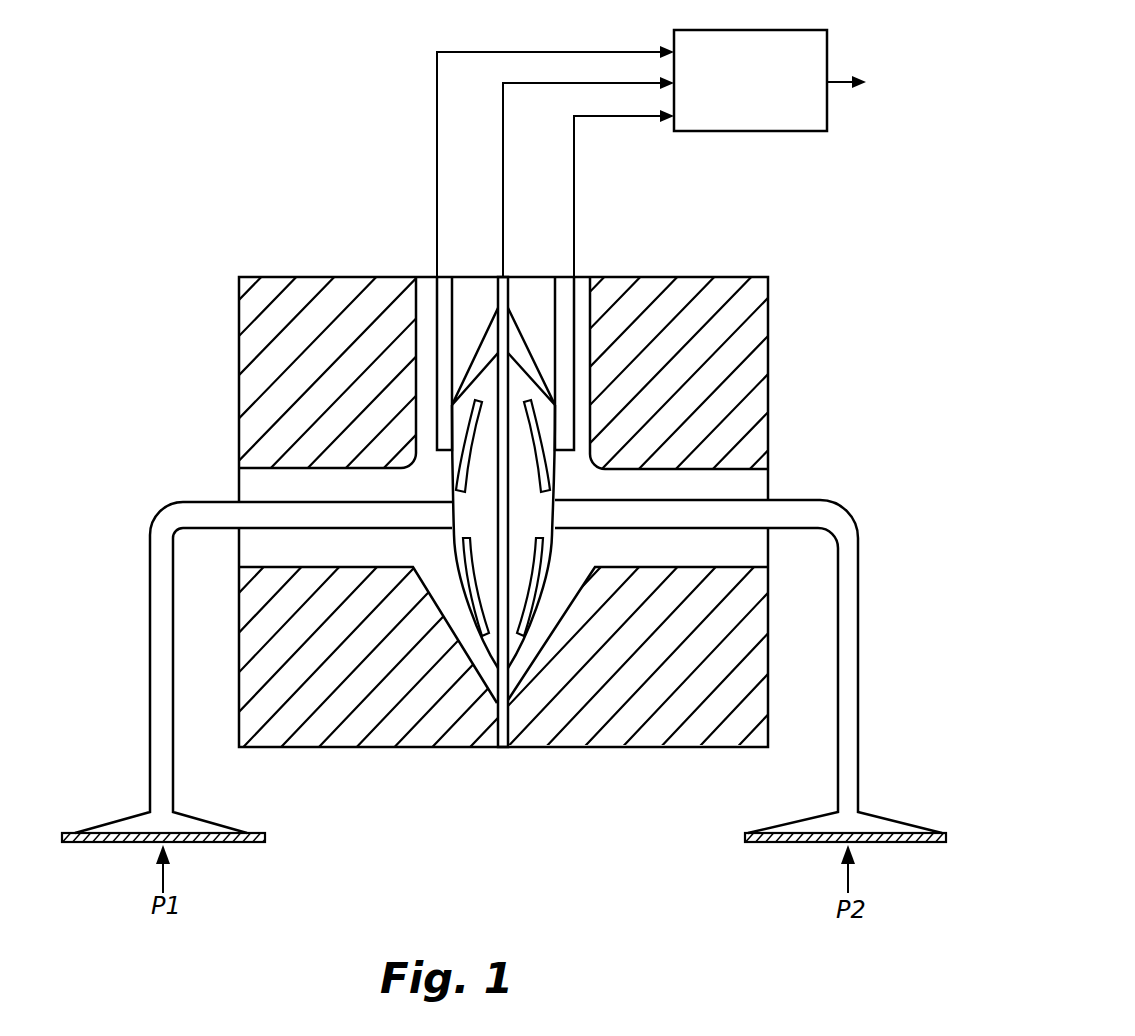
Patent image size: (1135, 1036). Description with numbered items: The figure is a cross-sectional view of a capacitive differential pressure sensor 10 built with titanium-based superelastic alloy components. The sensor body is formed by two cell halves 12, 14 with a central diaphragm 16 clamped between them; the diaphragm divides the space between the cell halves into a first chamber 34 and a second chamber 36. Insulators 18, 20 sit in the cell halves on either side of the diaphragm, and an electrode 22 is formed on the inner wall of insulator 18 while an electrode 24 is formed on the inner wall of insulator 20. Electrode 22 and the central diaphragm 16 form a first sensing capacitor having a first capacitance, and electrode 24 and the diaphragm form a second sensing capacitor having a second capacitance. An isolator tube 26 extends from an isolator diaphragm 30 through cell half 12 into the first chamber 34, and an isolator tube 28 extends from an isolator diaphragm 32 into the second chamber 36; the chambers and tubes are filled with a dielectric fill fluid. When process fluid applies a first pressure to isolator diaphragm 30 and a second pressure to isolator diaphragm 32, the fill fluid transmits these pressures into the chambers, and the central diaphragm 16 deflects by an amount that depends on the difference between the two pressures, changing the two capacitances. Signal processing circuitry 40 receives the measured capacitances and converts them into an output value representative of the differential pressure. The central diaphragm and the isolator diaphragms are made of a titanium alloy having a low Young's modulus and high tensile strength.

The differential pressure sensor 10 is at (186, 344).
The cell half 12 is at (410, 755).
The cell half 14 is at (640, 747).
The central diaphragm 16 is at (503, 747).
The insulator 18 is at (255, 478).
The insulator 20 is at (745, 500).
The electrode 22 is at (461, 570).
The electrode 24 is at (545, 565).
The isolator tube 26 is at (182, 520).
The isolator tube 28 is at (832, 500).
The isolator diaphragm 30 is at (108, 845).
The isolator diaphragm 32 is at (805, 843).
The first chamber 34 is at (490, 527).
The second chamber 36 is at (543, 527).
The signal processing circuitry 40 is at (745, 131).